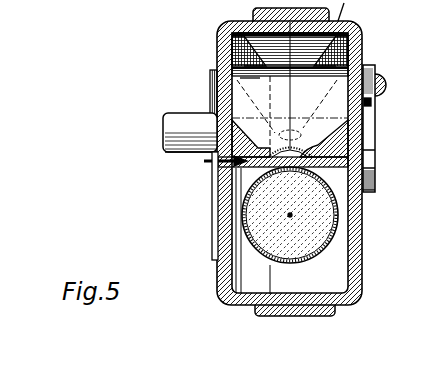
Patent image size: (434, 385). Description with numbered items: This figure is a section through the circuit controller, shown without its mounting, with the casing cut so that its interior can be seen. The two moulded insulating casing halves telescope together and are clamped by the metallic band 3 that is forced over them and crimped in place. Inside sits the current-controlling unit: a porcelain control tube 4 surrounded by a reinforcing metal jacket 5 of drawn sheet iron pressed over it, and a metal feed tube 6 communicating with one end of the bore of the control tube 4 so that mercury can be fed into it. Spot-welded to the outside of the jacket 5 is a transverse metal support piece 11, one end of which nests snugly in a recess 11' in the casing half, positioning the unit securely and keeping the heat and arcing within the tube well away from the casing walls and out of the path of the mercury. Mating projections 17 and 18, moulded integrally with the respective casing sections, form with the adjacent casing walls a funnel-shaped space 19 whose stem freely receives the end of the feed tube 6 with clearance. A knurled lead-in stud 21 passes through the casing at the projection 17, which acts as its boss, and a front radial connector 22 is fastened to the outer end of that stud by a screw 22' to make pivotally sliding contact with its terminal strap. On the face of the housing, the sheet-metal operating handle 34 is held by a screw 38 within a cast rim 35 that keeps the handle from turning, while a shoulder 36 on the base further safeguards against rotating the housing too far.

The metallic band 3 is at (294, 318).
The control tube 4 is at (363, 233).
The reinforcing metal jacket 5 is at (333, 257).
The feed tube 6 is at (330, 147).
The transverse metal support piece 11 is at (315, 144).
The recess 11' is at (389, 189).
The mating projection 17 is at (347, 29).
The mating projection 18 is at (247, 80).
The funnel-shaped space 19 is at (300, 62).
The lead-in stud 21 is at (368, 66).
The front radial connector 22 is at (388, 167).
The screw 22' is at (395, 77).
The operating handle 34 is at (185, 119).
The rim 35 is at (211, 72).
The shoulder 36 is at (212, 136).
The screw 38 is at (204, 162).